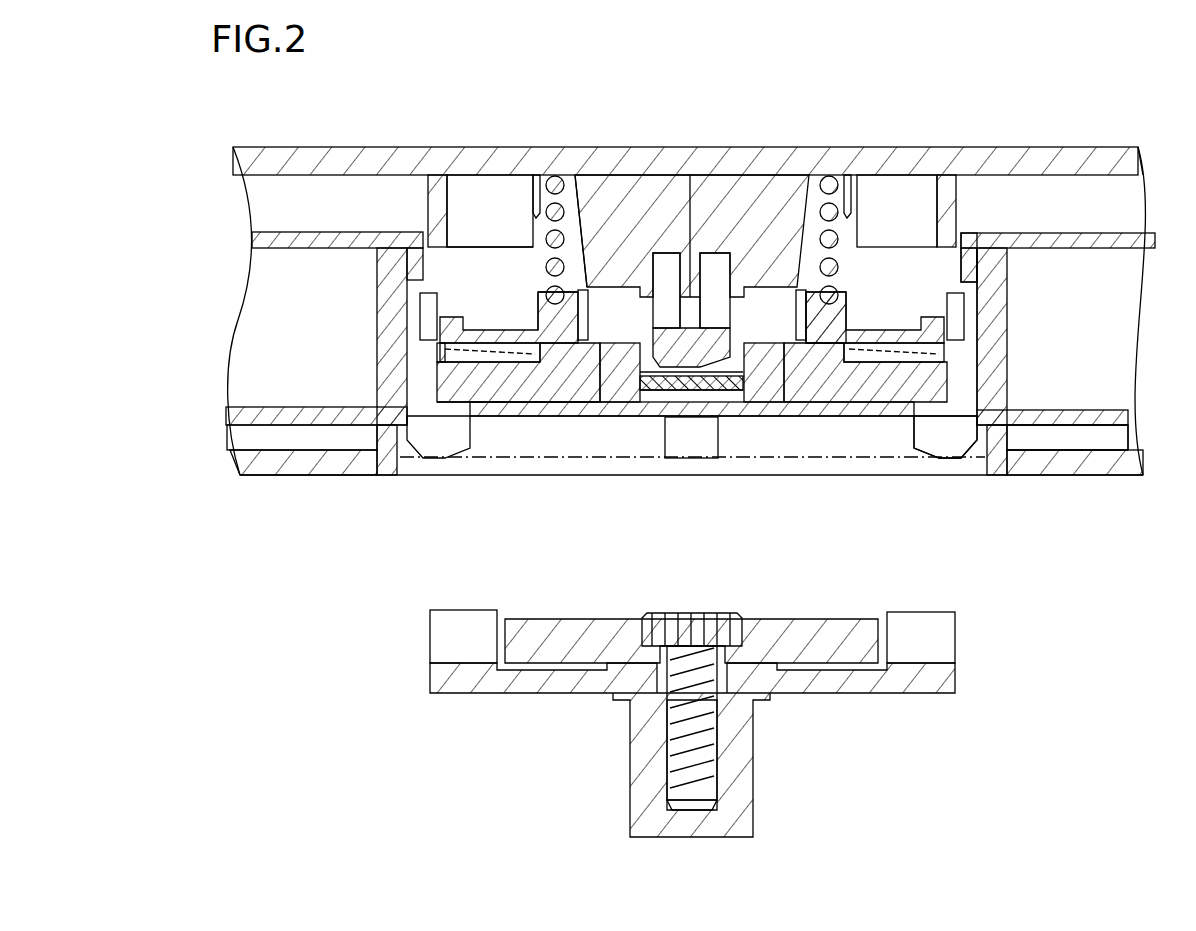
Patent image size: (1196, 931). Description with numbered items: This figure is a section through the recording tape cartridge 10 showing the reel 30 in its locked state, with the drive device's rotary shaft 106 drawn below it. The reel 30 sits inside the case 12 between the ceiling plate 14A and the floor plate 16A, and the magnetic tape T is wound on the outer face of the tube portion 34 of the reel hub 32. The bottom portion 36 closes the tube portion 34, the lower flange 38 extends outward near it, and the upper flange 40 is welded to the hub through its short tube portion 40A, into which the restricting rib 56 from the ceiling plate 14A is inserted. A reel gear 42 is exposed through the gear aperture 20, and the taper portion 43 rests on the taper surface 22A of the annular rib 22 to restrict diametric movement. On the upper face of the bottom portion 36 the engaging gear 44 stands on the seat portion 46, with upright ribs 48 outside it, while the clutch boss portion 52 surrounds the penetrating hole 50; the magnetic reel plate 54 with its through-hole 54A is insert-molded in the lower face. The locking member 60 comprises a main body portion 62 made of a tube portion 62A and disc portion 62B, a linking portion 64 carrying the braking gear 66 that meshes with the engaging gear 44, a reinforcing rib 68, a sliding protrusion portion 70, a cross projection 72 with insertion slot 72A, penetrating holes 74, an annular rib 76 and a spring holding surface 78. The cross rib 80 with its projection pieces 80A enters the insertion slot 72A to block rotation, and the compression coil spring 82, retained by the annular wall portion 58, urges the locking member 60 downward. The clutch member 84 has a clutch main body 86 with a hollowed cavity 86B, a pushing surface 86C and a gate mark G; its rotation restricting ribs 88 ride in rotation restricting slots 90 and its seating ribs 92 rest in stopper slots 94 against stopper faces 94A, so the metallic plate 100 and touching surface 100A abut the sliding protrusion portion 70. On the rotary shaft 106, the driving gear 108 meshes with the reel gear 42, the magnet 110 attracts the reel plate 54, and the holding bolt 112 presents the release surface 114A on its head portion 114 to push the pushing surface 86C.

The recording tape cartridge 10 is at (1120, 104).
The case 12 is at (1112, 147).
The ceiling plate 14A is at (1033, 155).
The floor plate 16A is at (1040, 465).
The gear aperture 20 is at (988, 455).
The annular rib 22 is at (1040, 440).
The taper surface 22A is at (1012, 430).
The reel 30 is at (320, 435).
The reel hub 32 is at (1062, 330).
The tube portion 34 is at (1000, 360).
The bottom portion 36 is at (1000, 380).
The lower flange 38 is at (1100, 415).
The upper flange 40 is at (1052, 245).
The short tube portion 40A is at (968, 262).
The reel gear 42 is at (440, 445).
The taper portion 43 is at (385, 455).
The engaging gear 44 is at (450, 350).
The seat portion 46 is at (455, 366).
The upright ribs 48 is at (425, 305).
The penetrating hole 50 is at (788, 395).
The clutch boss portion 52 is at (825, 340).
The reel plate 54 is at (535, 414).
The through-hole 54A is at (620, 430).
The restricting rib 56 is at (943, 190).
The annular wall portion 58 is at (876, 195).
The locking member 60 is at (925, 320).
The main body portion 62 is at (485, 522).
The tube portion 62A is at (540, 440).
The disc portion 62B is at (580, 440).
The linking portion 64 is at (470, 335).
The braking gear 66 is at (455, 352).
The reinforcing rib 68 is at (448, 320).
The sliding protrusion portion 70 is at (687, 420).
The cross projection 72 is at (545, 222).
The insertion slot 72A is at (575, 262).
The penetrating holes 74 is at (565, 292).
The rib 76 is at (845, 305).
The spring holding surface 78 is at (542, 305).
The cross rib 80 is at (737, 175).
The projection pieces 80A is at (682, 180).
The compression coil spring 82 is at (574, 185).
The clutch member 84 is at (620, 400).
The clutch main body 86 is at (640, 400).
The hollowed cavity 86B is at (735, 400).
The pushing surface 86C is at (700, 395).
The rotation restricting ribs 88 is at (650, 360).
The rotation restricting slots 90 is at (662, 280).
The seating ribs 92 is at (715, 280).
The stopper slots 94 is at (838, 265).
The stopper faces 94A is at (900, 395).
The metallic plate 100 is at (716, 230).
The touching surface 100A is at (730, 380).
The rotary shaft 106 is at (985, 612).
The driving gear 108 is at (445, 632).
The magnet 110 is at (522, 635).
The holding bolt 112 is at (715, 790).
The head portion 114 is at (700, 630).
The release surface 114A is at (668, 613).
The gate mark G is at (680, 380).
The magnetic tape T is at (1125, 300).